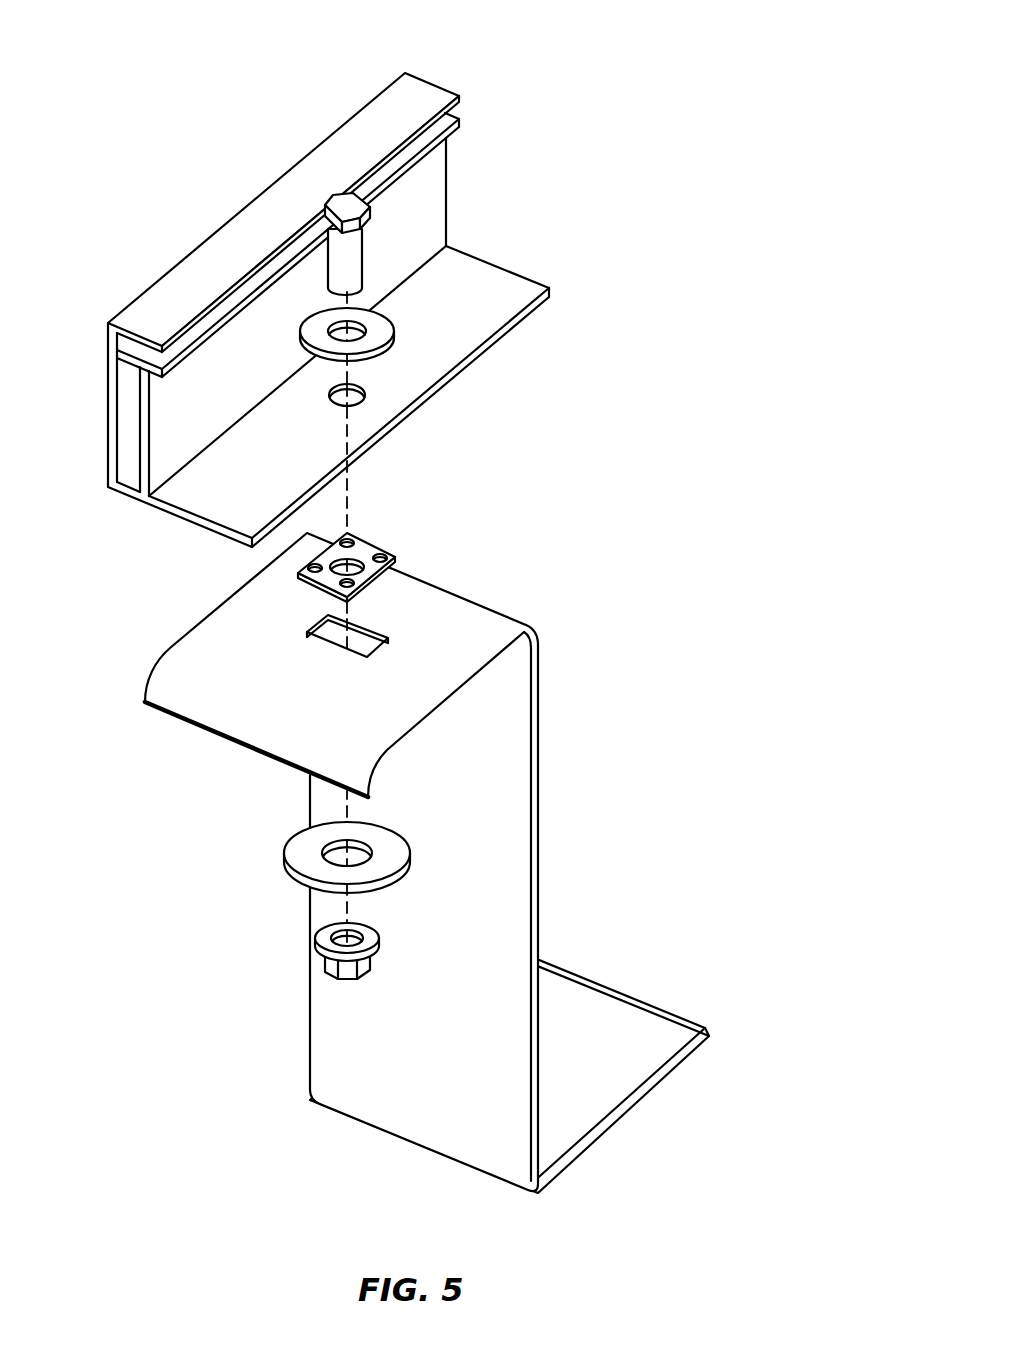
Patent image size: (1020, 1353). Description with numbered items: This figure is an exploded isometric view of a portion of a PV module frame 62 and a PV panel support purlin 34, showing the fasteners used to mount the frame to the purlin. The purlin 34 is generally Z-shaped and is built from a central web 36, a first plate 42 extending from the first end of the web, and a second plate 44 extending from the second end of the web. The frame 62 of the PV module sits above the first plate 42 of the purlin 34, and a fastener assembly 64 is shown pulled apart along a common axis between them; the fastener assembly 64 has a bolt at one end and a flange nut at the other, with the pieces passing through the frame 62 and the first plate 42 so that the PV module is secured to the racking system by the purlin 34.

The frame 62 is at (328, 273).
The fastener assembly 64 is at (420, 240).
The PV panel support purlin 34 is at (452, 863).
The central web 36 is at (498, 912).
The first plate 42 is at (247, 630).
The second plate 44 is at (602, 1085).